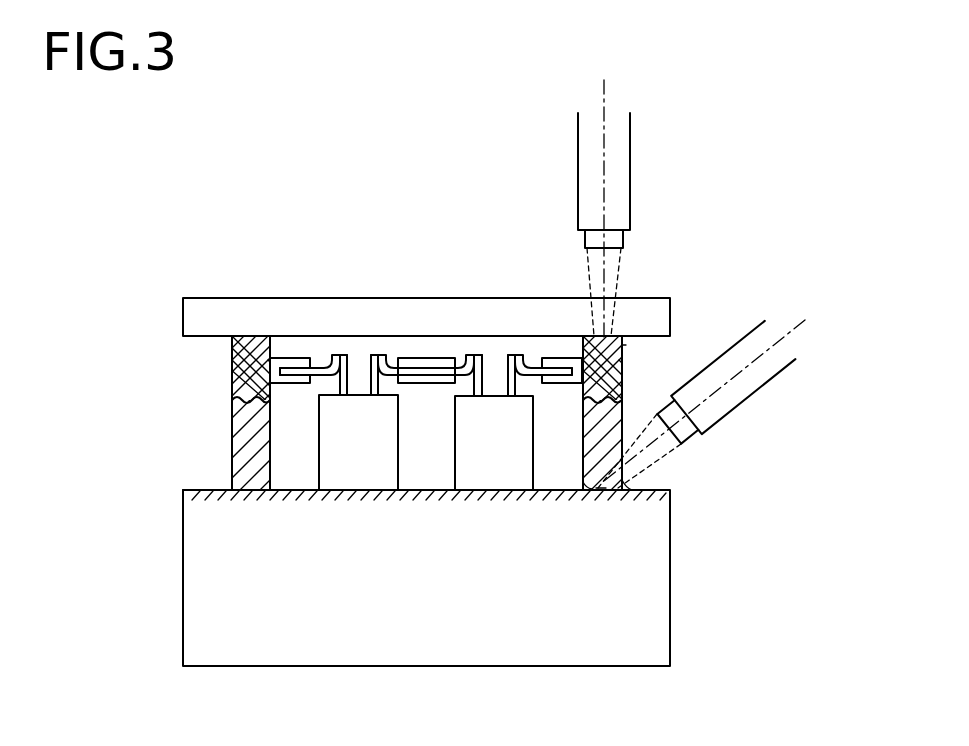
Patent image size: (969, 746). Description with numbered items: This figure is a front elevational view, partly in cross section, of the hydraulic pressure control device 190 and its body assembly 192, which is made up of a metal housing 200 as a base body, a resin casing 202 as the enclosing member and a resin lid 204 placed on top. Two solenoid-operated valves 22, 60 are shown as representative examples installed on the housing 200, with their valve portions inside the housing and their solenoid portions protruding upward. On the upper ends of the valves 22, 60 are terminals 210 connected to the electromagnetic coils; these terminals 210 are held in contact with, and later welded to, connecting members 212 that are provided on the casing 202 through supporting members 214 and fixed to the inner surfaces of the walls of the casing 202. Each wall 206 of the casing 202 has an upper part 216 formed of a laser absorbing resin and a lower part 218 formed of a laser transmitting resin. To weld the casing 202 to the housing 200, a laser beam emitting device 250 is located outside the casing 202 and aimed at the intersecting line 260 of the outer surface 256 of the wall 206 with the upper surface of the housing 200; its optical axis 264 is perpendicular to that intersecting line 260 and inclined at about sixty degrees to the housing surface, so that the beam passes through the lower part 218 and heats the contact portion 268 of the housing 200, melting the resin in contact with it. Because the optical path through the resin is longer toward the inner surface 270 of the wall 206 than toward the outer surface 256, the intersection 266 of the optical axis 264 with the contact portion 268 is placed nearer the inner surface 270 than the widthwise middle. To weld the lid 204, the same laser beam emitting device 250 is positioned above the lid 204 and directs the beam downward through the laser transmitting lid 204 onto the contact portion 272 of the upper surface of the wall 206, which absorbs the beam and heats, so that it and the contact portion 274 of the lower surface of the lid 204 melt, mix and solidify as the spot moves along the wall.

The hydraulic pressure control device 190 is at (303, 178).
The body assembly 192 is at (163, 509).
The housing 200 is at (586, 674).
The casing 202 is at (222, 415).
The lid 204 is at (218, 308).
The wall 206 is at (607, 430).
The terminals 210 is at (345, 357).
The connecting members 212 is at (327, 362).
The supporting members 214 is at (288, 362).
The upper part 216 is at (232, 362).
The lower part 218 is at (248, 468).
The solenoid-operated valve 22 is at (350, 457).
The solenoid-operated valve 60 is at (480, 460).
The laser beam emitting device 250 is at (617, 195).
The outer surface 256 is at (627, 363).
The intersecting line 260 is at (620, 488).
The optical axis 264 is at (773, 377).
The intersection 266 is at (600, 489).
The contact portion 268 is at (592, 489).
The inner surface 270 is at (583, 423).
The contact portion 272 is at (592, 318).
The contact portion 274 is at (565, 330).